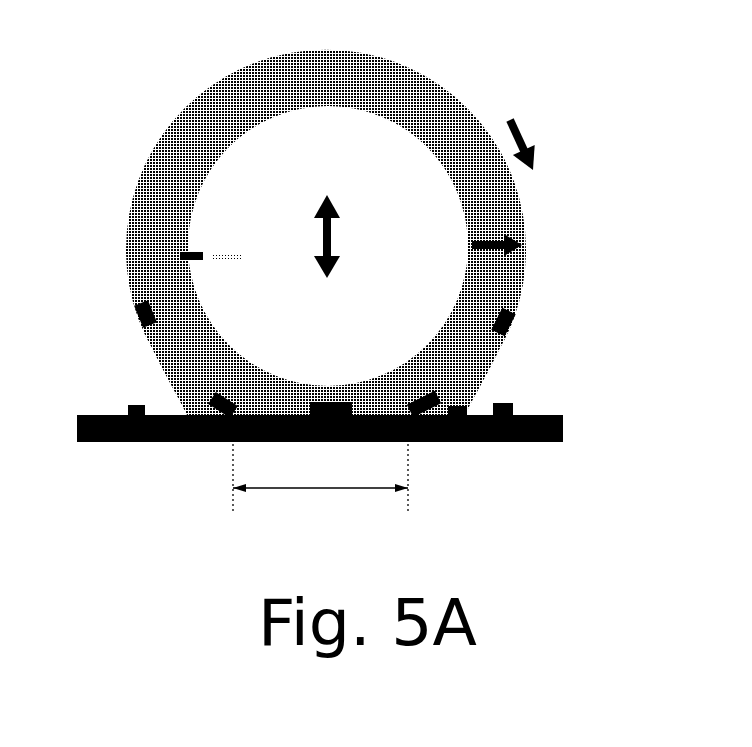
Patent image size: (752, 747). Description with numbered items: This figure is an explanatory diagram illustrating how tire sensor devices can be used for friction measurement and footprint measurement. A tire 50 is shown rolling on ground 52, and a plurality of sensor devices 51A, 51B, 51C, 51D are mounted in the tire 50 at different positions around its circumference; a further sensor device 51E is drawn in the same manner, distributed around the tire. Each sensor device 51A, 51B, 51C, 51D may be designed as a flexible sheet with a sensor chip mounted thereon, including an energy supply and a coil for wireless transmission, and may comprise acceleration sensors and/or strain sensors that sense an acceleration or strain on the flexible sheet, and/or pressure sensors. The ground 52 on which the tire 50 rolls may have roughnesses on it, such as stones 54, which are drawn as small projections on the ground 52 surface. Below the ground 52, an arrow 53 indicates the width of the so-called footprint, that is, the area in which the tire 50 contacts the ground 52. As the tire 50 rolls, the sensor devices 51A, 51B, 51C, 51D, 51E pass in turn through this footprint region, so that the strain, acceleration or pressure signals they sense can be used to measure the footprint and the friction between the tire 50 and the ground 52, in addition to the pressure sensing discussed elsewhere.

The tire 50 is at (460, 103).
The sensor device 51A is at (512, 317).
The sensor device 51B is at (433, 393).
The sensor device 51C is at (347, 402).
The sensor device 51D is at (203, 398).
The sensor 51E is at (136, 297).
The ground 52 is at (560, 416).
The arrow 53 is at (322, 490).
The stones 54 is at (510, 405).